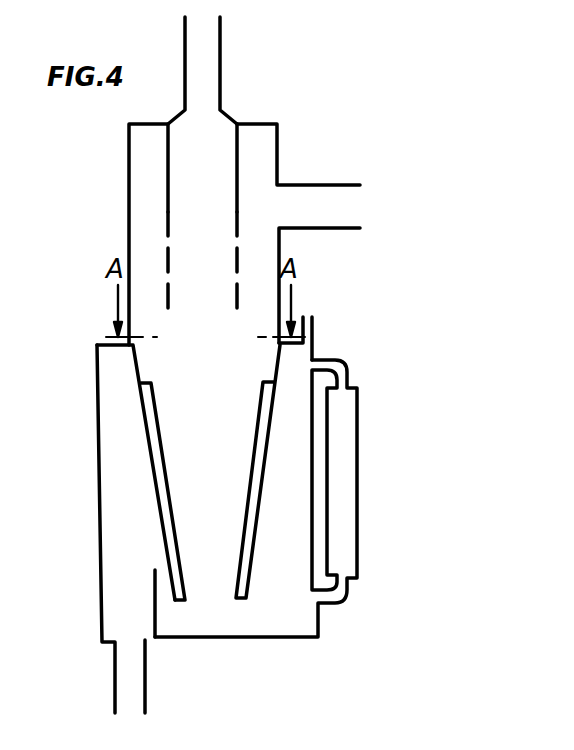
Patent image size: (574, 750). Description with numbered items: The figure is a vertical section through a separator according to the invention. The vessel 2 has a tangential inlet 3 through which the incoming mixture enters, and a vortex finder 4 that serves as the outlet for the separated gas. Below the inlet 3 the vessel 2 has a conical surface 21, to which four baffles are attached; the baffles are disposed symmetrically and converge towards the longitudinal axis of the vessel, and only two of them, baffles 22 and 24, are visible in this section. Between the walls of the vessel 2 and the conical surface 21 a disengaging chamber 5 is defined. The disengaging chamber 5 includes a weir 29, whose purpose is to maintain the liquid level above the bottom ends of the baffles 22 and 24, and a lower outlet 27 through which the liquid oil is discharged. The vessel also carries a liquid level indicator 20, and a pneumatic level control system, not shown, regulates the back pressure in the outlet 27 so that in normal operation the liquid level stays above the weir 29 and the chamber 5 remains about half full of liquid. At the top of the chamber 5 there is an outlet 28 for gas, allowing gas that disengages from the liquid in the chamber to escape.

The vessel 2 is at (112, 222).
The tangential inlet 3 is at (326, 229).
The vortex finder 4 is at (237, 195).
The disengaging chamber 5 is at (97, 405).
The liquid level indicator 20 is at (345, 468).
The conical surface 21 is at (133, 365).
The baffle 22 is at (158, 502).
The baffle 24 is at (248, 537).
The lower outlet 27 is at (115, 675).
The gas outlet 28 is at (315, 330).
The weir 29 is at (157, 612).